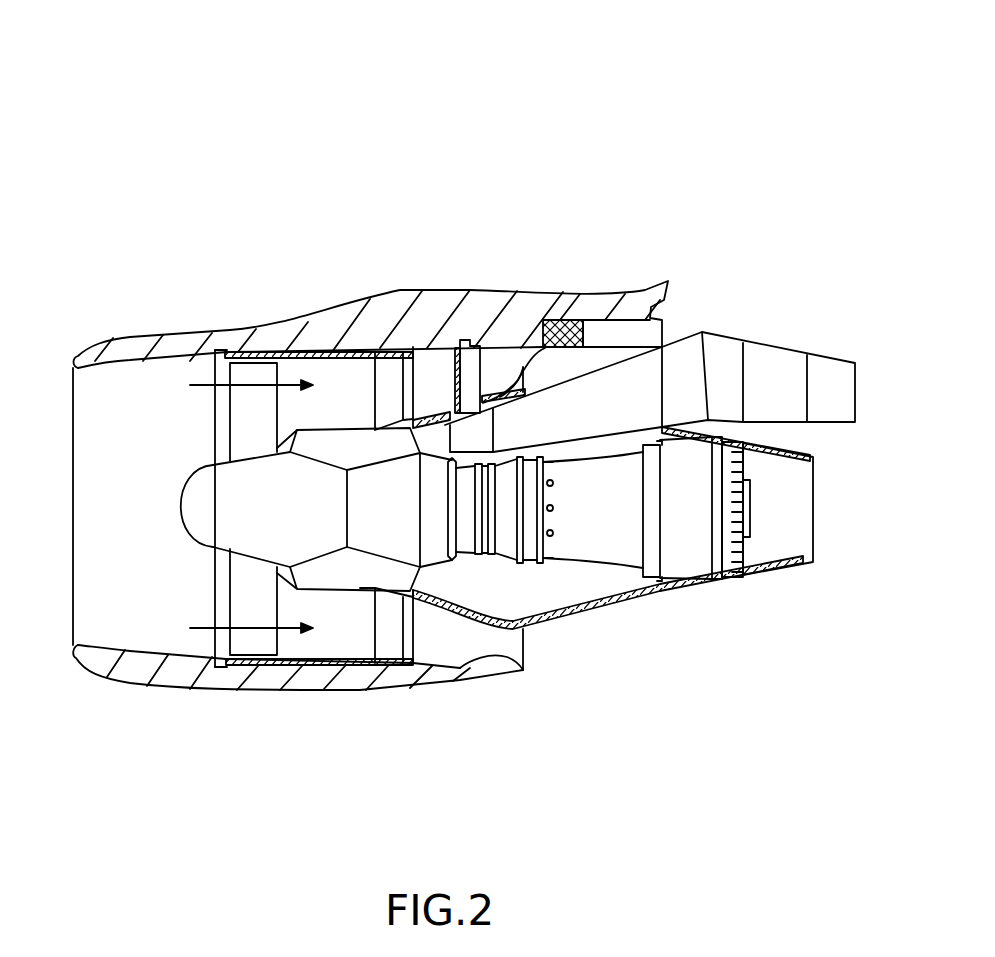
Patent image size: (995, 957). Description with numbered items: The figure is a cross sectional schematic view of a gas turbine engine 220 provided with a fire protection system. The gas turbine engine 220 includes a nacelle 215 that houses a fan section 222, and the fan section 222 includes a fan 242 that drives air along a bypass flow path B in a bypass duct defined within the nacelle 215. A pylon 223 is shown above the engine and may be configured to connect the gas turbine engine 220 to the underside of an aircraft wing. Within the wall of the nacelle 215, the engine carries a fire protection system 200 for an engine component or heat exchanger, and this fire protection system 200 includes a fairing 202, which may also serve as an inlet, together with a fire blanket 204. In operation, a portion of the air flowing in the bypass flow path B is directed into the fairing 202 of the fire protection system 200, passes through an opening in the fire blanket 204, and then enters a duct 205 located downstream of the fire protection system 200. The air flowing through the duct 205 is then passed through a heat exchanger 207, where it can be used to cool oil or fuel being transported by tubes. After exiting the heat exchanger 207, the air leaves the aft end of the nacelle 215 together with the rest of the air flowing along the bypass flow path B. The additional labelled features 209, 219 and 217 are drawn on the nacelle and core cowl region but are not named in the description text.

The gas turbine engine 220 is at (94, 128).
The fan section 222 is at (265, 305).
The fire protection system 200 is at (453, 318).
The fairing 202 is at (455, 365).
The fire blanket 204 is at (470, 363).
The duct 205 is at (517, 347).
The heat exchanger 207 is at (583, 323).
The fan case flange 209 is at (615, 333).
The pylon 223 is at (765, 368).
The fan 242 is at (272, 434).
The core cowl 219 is at (618, 604).
The fan nozzle 217 is at (523, 670).
The nacelle 215 is at (170, 672).